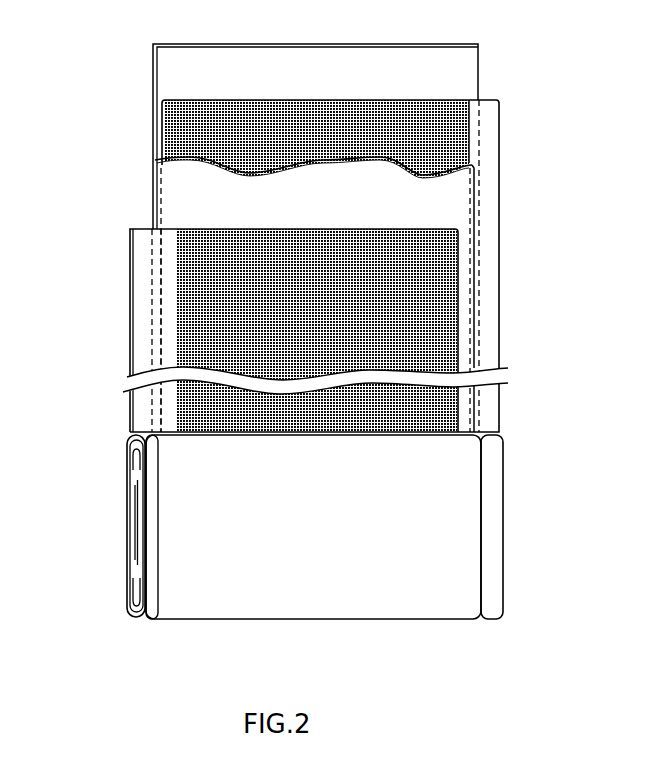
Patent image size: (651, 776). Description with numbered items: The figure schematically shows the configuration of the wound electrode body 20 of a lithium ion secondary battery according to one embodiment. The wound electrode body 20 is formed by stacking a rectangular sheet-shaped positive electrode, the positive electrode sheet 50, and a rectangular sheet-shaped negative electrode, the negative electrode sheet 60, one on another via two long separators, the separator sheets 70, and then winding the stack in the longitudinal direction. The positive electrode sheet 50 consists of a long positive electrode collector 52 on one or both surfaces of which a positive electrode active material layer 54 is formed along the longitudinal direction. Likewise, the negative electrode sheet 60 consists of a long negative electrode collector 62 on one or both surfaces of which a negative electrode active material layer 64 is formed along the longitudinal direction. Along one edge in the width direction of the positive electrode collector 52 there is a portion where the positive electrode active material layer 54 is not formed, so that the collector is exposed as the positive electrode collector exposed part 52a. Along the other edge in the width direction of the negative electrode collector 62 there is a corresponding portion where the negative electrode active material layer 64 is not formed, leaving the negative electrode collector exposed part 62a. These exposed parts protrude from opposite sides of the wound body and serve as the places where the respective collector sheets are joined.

The wound electrode body 20 is at (399, 604).
The positive electrode sheet 50 is at (256, 423).
The positive electrode collector 52 is at (130, 365).
The positive electrode collector exposed part 52a is at (140, 332).
The positive electrode active material layer 54 is at (190, 246).
The negative electrode sheet 60 is at (370, 322).
The negative electrode collector 62 is at (500, 273).
The negative electrode collector exposed part 62a is at (490, 223).
The negative electrode active material layer 64 is at (469, 122).
The separator sheet 70 is at (169, 73).